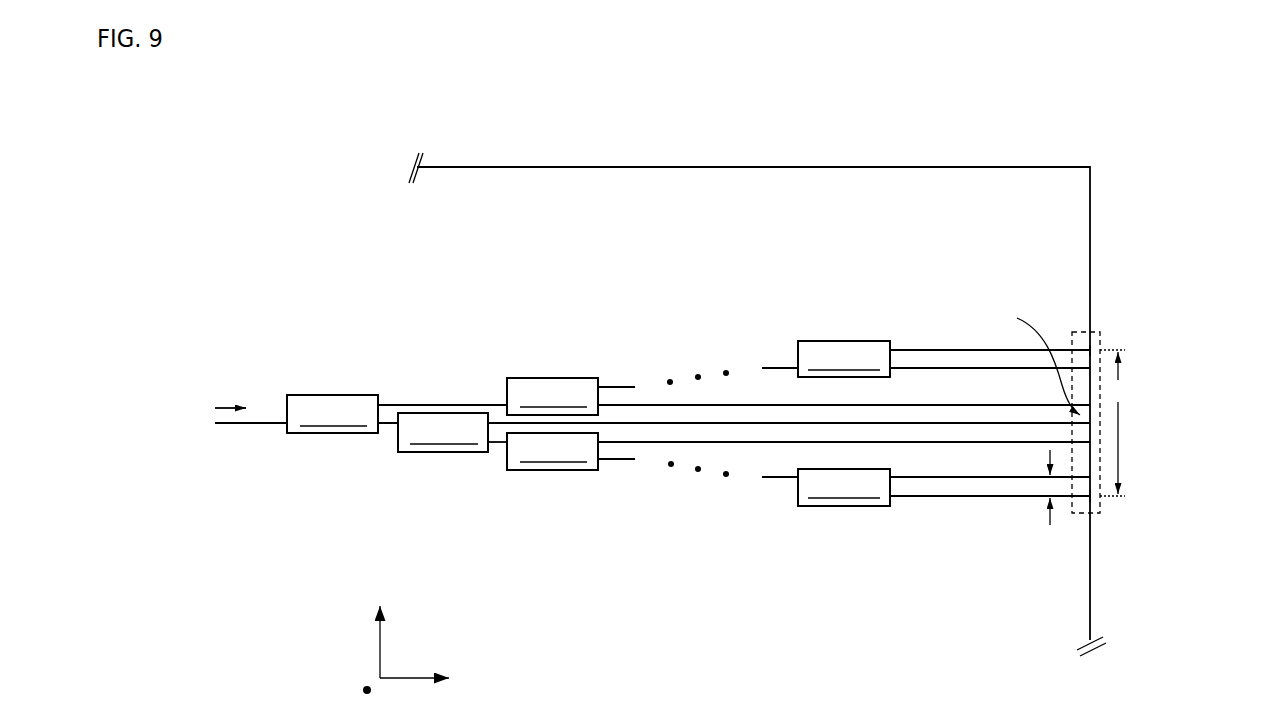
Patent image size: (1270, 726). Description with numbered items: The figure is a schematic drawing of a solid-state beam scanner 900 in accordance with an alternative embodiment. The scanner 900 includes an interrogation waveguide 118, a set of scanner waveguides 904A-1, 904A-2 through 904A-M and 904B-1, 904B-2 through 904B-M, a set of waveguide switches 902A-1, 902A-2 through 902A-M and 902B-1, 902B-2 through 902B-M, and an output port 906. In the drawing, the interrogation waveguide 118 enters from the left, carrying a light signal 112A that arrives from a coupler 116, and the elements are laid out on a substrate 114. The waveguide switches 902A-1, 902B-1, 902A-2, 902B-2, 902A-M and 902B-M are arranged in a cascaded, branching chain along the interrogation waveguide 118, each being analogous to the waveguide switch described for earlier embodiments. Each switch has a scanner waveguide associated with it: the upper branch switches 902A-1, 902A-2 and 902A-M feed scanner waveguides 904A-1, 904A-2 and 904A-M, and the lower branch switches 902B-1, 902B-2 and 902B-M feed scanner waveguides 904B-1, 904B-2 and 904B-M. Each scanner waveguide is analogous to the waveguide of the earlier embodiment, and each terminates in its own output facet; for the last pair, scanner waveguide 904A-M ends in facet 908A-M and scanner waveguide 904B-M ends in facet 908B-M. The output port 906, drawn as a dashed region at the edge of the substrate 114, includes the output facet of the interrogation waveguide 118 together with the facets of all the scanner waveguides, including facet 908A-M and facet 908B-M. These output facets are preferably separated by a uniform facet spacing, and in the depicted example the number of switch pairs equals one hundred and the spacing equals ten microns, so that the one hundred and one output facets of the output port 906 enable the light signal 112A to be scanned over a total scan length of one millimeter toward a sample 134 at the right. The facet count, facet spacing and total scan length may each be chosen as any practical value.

The scanner 900 is at (323, 165).
The substrate 114 is at (823, 268).
The coupler 116 is at (144, 422).
The light signal 112A is at (221, 392).
The interrogation waveguide 118 is at (232, 426).
The waveguide switch 902A-1 is at (332, 414).
The waveguide switch 902B-1 is at (443, 432).
The waveguide switch 902A-2 is at (552, 396).
The waveguide switch 902B-2 is at (552, 451).
The waveguide switch 902A-M is at (844, 359).
The waveguide switch 902B-M is at (844, 487).
The scanner waveguide 904A-1 is at (394, 402).
The scanner waveguide 904B-1 is at (495, 445).
The scanner waveguide 904A-2 is at (613, 383).
The scanner waveguide 904B-2 is at (617, 462).
The scanner waveguide 904A-M is at (922, 347).
The scanner waveguide 904B-M is at (925, 500).
The facet 908A-M is at (1079, 340).
The facet 908B-M is at (1080, 506).
The output port 906 is at (1103, 341).
The sample 134 is at (1205, 415).